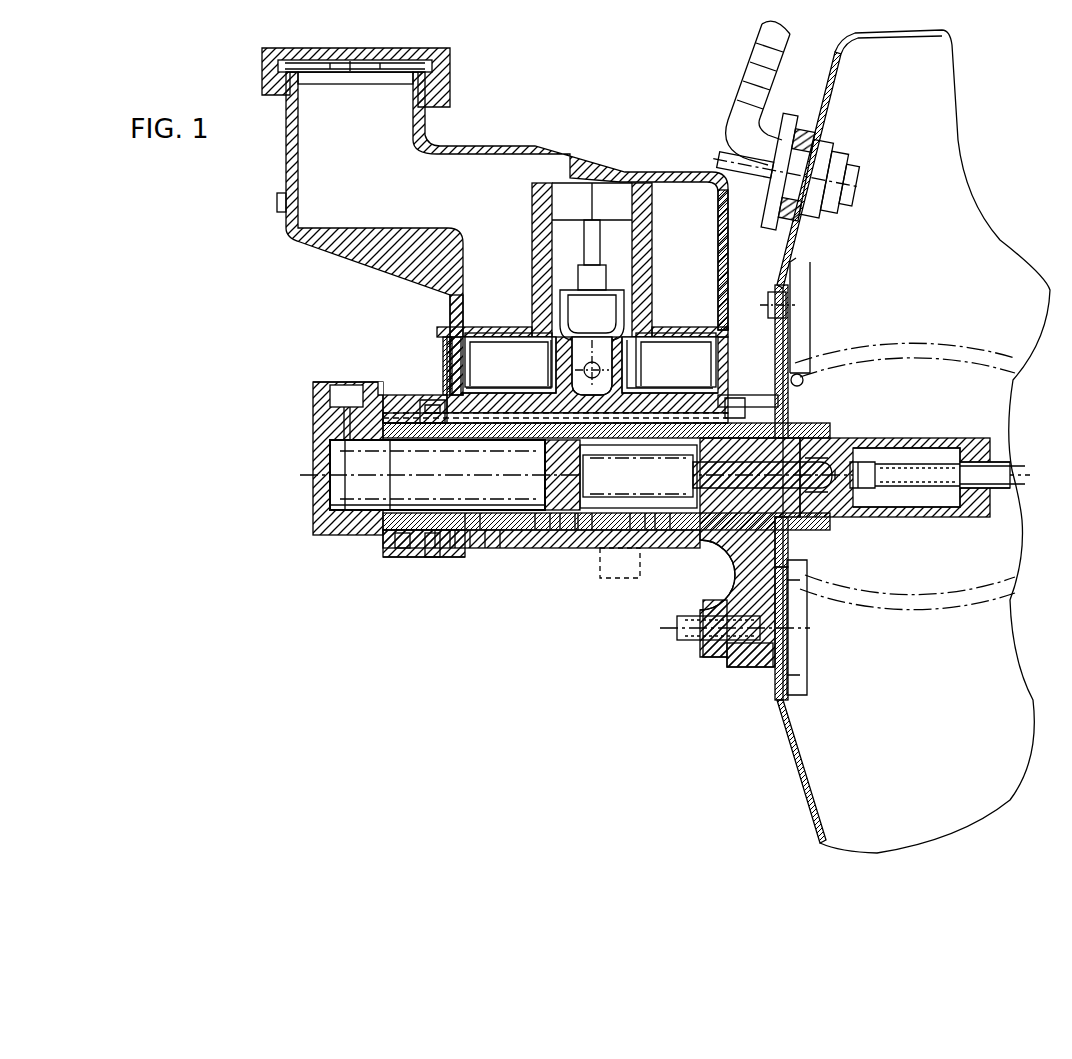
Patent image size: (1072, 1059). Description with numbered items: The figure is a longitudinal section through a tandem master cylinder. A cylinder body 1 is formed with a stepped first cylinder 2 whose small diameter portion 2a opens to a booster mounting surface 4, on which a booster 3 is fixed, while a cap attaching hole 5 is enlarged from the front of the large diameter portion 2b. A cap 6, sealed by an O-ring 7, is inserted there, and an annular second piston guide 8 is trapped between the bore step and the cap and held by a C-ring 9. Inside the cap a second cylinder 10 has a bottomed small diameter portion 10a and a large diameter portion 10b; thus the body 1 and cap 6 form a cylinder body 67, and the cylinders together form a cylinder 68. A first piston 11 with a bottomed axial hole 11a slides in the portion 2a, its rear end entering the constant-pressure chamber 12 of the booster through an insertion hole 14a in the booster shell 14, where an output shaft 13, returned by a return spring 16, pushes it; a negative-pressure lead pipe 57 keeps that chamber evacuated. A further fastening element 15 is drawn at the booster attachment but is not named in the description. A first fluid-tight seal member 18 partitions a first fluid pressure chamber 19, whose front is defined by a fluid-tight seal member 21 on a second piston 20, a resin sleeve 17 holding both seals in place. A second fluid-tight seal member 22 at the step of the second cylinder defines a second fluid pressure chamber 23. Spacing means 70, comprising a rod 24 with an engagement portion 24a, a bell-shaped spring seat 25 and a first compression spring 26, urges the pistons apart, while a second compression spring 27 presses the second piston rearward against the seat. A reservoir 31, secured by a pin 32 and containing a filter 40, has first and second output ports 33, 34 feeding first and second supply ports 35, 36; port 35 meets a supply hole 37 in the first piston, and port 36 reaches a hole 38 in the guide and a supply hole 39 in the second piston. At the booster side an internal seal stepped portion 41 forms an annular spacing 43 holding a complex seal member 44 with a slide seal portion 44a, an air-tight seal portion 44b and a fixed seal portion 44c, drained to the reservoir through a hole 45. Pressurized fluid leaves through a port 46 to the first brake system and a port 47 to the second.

The cylinder body 1 is at (500, 555).
The first cylinder 2 is at (522, 548).
The small diameter portion 2a is at (718, 548).
The large diameter portion 2b is at (490, 548).
The booster 3 is at (800, 816).
The booster mounting surface 4 is at (790, 598).
The cap attaching hole 5 is at (400, 534).
The cap 6 is at (320, 518).
The O-ring 7 is at (420, 568).
The second piston guide 8 is at (460, 548).
The C-ring 9 is at (400, 535).
The second cylinder 10 is at (350, 514).
The small diameter portion 10a is at (345, 440).
The large diameter portion 10b is at (463, 410).
The first piston 11 is at (934, 438).
The axial hole 11a is at (805, 450).
The constant-pressure chamber 12 is at (800, 738).
The output shaft 13 is at (1000, 466).
The booster shell 14 is at (790, 707).
The insertion hole 14a is at (805, 372).
The mounting bolt 15 is at (698, 634).
The return spring 16 is at (960, 610).
The sleeve 17 is at (566, 548).
The first fluid-tight seal member 18 is at (700, 432).
The first fluid pressure chamber 19 is at (636, 555).
The second piston 20 is at (542, 548).
The fluid-tight seal member 21 is at (470, 548).
The second fluid-tight seal member 22 is at (440, 556).
The second fluid pressure chamber 23 is at (345, 465).
The rod 24 is at (832, 470).
The engagement portion 24a is at (662, 548).
The spring seat 25 is at (582, 548).
The first compression spring 26 is at (818, 458).
The second compression spring 27 is at (330, 505).
The reservoir 31 is at (527, 142).
The pin 32 is at (596, 362).
The first output port 33 is at (727, 330).
The second output port 34 is at (466, 330).
The first supply port 35 is at (735, 345).
The second supply port 36 is at (478, 428).
The supply hole 37 is at (730, 415).
The hole 38 is at (505, 385).
The supply hole 39 is at (432, 412).
The filter 40 is at (660, 400).
The internal seal stepped portion 41 is at (722, 612).
The annular spacing 43 is at (740, 582).
The complex seal member 44 is at (795, 560).
The slide seal portion 44a is at (785, 530).
The air-tight seal portion 44b is at (790, 545).
The fixed seal portion 44c is at (762, 603).
The hole 45 is at (738, 398).
The port 46 is at (612, 578).
The port 47 is at (330, 394).
The negative-pressure lead pipe 57 is at (745, 95).
The cylinder body 67 is at (435, 552).
The cylinder 68 is at (520, 440).
The spacing means 70 is at (612, 456).